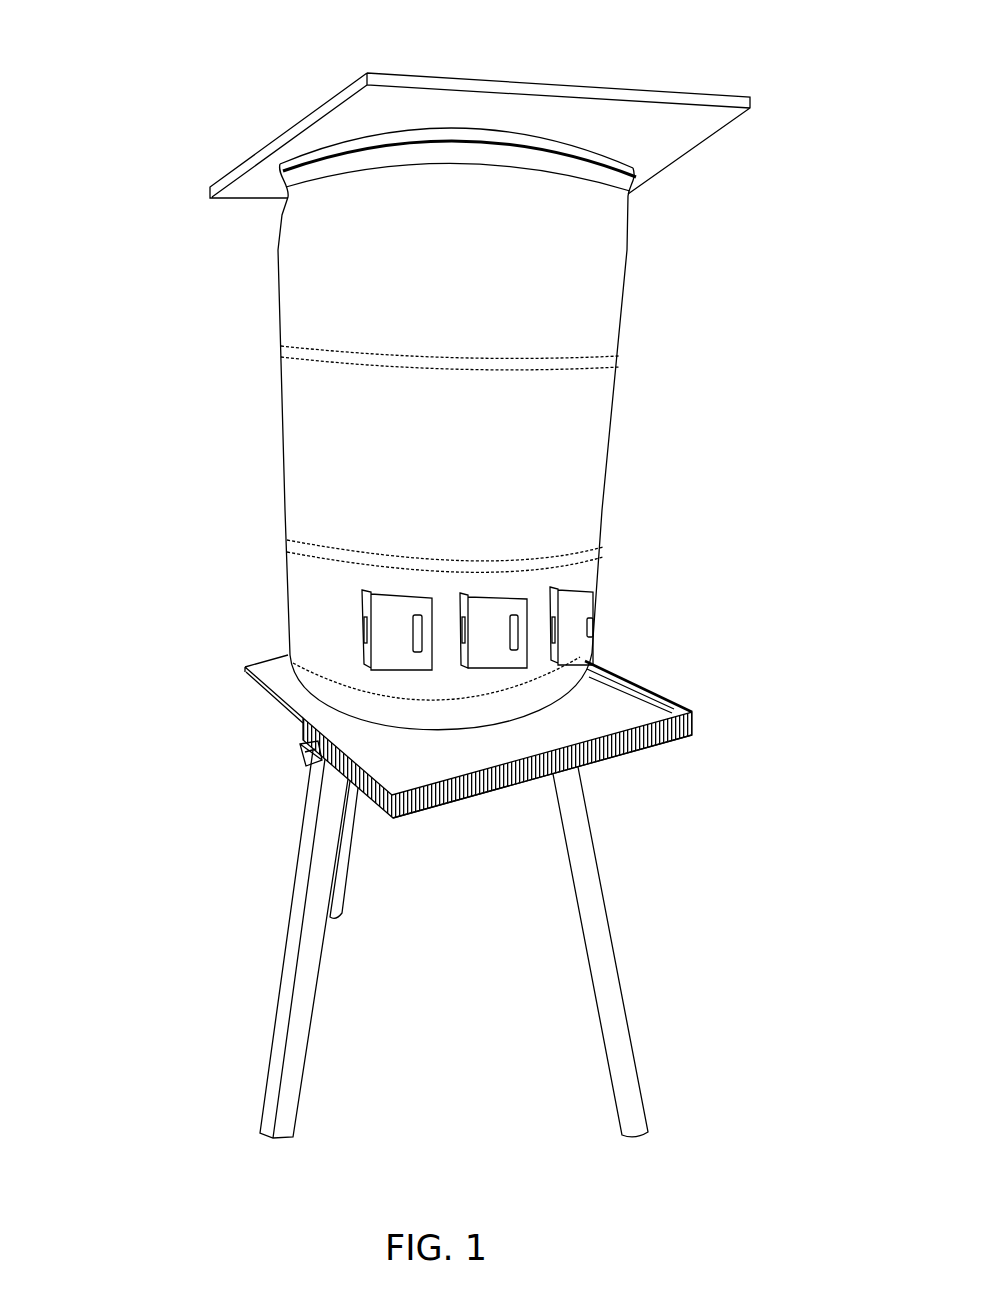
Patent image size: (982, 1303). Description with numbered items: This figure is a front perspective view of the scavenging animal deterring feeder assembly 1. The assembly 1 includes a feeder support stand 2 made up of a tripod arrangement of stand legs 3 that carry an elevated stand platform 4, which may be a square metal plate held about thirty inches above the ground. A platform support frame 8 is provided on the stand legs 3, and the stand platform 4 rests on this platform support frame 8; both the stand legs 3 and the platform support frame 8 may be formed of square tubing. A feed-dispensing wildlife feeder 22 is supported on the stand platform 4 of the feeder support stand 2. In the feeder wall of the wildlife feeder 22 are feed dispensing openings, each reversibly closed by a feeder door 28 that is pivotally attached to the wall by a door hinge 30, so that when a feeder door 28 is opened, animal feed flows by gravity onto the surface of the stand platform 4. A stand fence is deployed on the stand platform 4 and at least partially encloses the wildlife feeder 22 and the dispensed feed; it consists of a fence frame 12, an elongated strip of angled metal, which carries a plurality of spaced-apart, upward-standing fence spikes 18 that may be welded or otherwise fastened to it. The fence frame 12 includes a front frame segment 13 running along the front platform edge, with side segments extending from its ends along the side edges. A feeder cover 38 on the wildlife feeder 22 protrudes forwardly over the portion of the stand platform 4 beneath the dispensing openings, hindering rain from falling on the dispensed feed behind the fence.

The assembly 1 is at (166, 136).
The feeder support stand 2 is at (233, 757).
The stand leg 3 is at (300, 1042).
The stand platform 4 is at (254, 652).
The platform support frame 8 is at (302, 760).
The fence frame 12 is at (433, 816).
The front frame segment 13 is at (505, 790).
The fence spikes 18 is at (641, 746).
The feed-dispensing wildlife feeder 22 is at (272, 318).
The feeder door 28 is at (581, 588).
The door hinge 30 is at (553, 588).
The feeder cover 38 is at (453, 88).